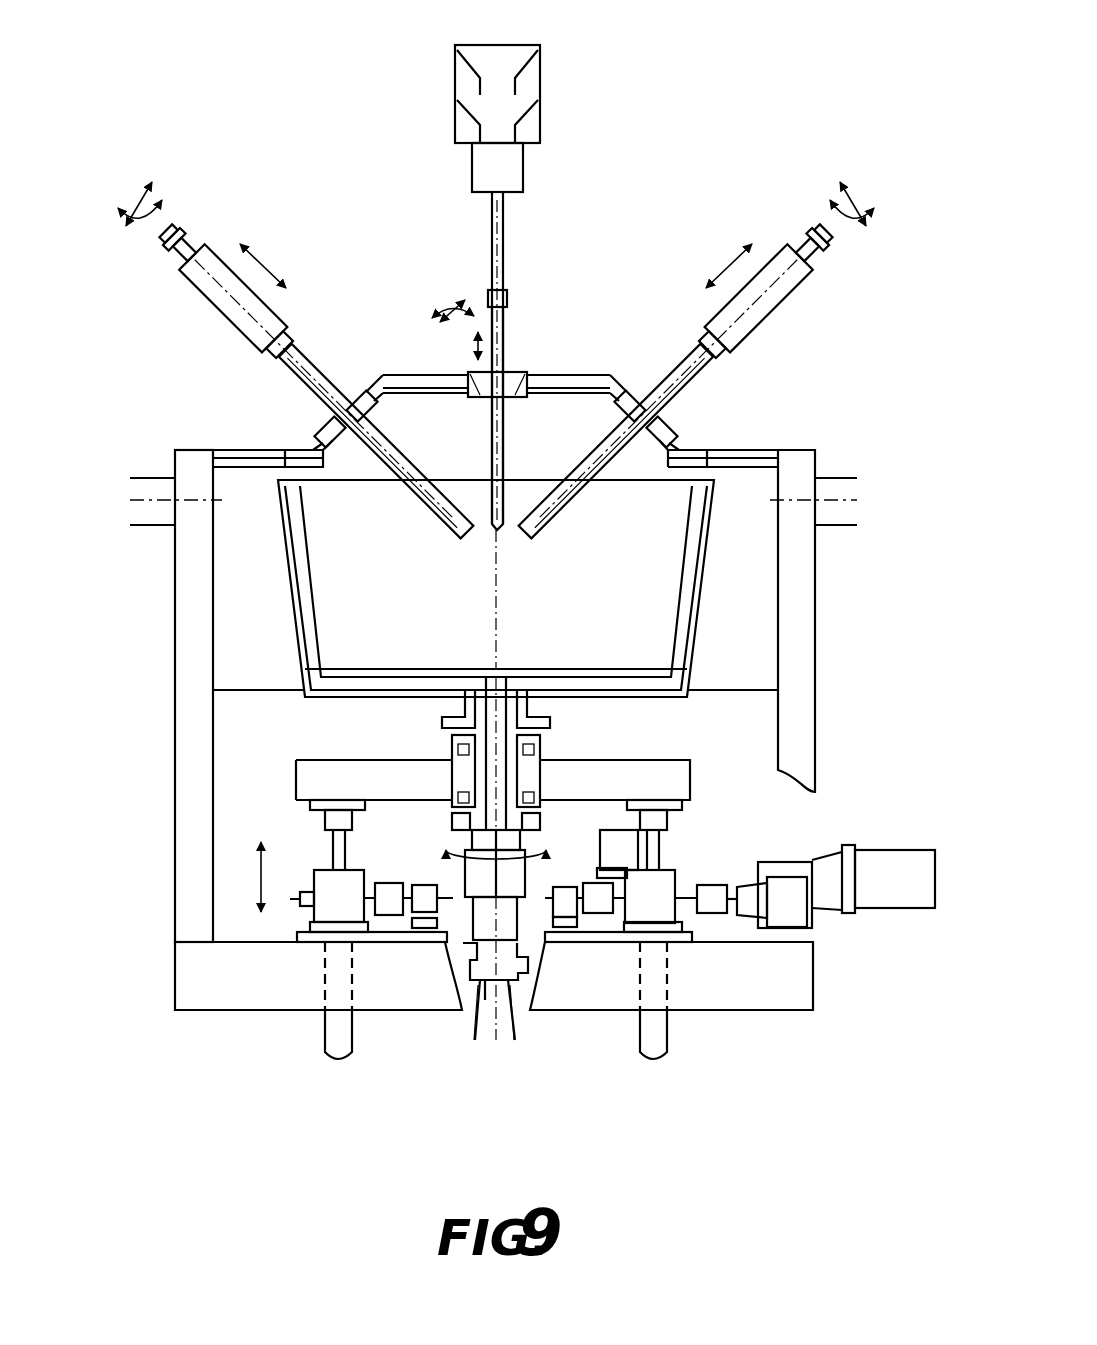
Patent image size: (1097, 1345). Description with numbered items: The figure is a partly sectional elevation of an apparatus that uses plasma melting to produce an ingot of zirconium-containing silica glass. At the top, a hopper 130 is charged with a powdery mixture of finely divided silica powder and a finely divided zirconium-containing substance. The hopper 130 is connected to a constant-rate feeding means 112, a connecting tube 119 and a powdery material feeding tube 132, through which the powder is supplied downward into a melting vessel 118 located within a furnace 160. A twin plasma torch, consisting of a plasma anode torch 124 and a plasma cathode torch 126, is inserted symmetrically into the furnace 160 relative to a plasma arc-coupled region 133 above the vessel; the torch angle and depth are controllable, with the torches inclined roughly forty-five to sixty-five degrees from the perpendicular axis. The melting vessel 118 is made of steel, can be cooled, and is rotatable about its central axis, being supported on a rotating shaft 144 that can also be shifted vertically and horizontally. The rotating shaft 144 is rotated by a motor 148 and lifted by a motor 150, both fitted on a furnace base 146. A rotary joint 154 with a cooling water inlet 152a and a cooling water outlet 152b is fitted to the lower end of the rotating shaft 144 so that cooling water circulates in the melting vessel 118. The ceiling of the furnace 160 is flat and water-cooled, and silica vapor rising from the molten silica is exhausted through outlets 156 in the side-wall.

The hopper 130 is at (540, 76).
The constant-rate feeding means 112 is at (524, 166).
The connecting tube 119 is at (505, 246).
The powdery material feeding tube 132 is at (506, 337).
The plasma anode torch 124 is at (210, 311).
The plasma cathode torch 126 is at (782, 311).
The outlets 156 is at (132, 480).
The furnace 160 is at (816, 630).
The melting vessel 118 is at (698, 628).
The plasma arc-coupled region 133 is at (501, 548).
The motor 148 is at (633, 848).
The rotating shaft 144 is at (450, 903).
The motor 150 is at (878, 908).
The cooling water inlet 152a is at (526, 985).
The cooling water outlet 152b is at (470, 1012).
The rotary joint 154 is at (499, 1015).
The furnace base 146 is at (710, 1011).